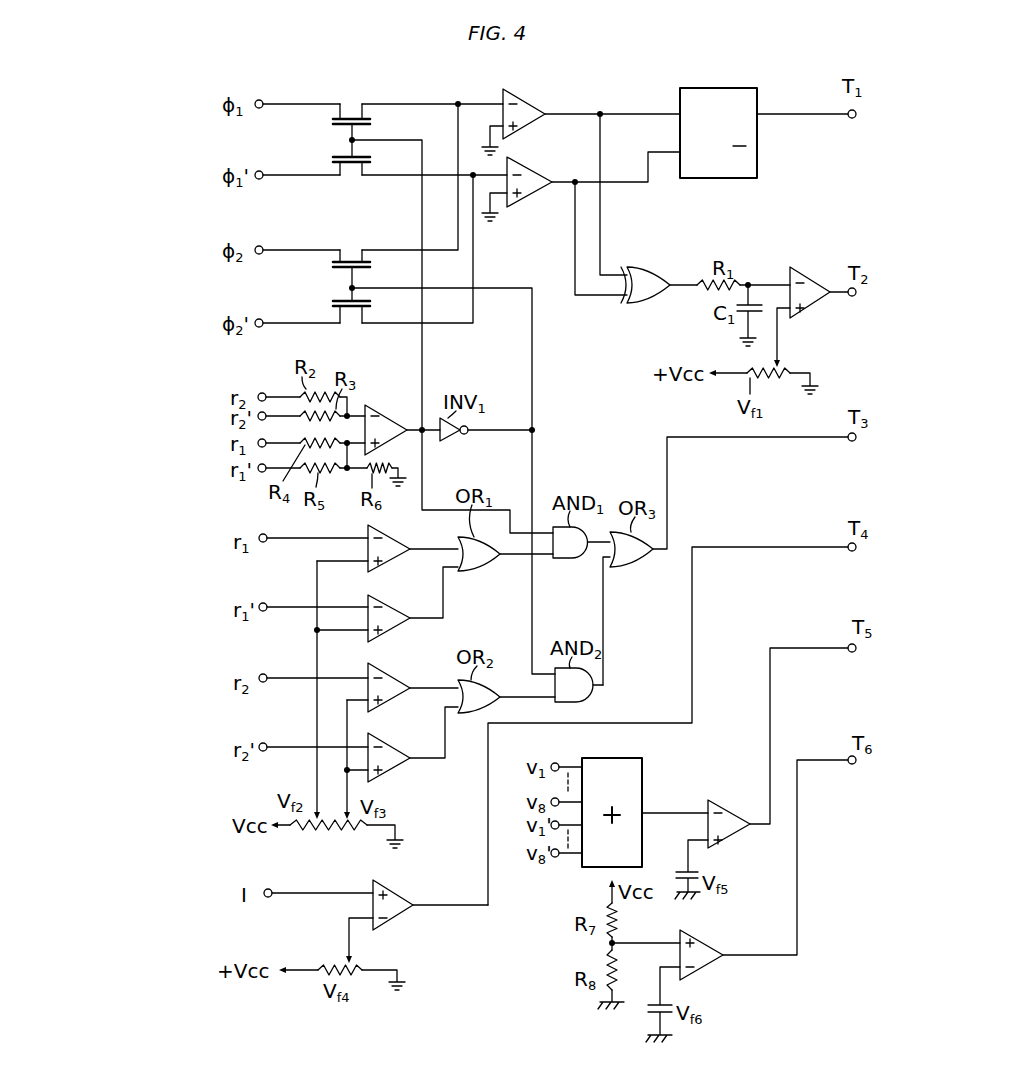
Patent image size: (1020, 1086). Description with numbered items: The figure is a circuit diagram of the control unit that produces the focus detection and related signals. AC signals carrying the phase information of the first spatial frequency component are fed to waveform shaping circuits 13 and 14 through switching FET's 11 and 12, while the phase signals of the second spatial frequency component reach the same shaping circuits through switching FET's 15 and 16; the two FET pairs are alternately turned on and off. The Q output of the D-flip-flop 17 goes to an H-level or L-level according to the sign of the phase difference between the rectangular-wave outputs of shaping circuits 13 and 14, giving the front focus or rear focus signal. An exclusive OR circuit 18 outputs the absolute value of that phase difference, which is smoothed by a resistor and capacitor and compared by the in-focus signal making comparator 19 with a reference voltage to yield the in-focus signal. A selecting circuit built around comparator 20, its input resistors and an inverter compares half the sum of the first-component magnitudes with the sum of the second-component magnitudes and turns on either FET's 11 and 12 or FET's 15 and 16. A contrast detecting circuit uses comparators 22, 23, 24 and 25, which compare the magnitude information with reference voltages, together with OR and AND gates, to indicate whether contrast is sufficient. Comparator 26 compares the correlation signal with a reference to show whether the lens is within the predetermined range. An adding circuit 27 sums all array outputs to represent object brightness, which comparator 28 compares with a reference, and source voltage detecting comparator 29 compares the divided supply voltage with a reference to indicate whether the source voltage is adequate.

The switching FET 11 is at (365, 122).
The switching FET 12 is at (365, 157).
The waveform shaping circuit 13 is at (528, 79).
The waveform shaping circuit 14 is at (534, 148).
The switching FET 15 is at (365, 269).
The switching FET 16 is at (365, 305).
The D-flip-flop 17 is at (720, 88).
The exclusive OR circuit 18 is at (652, 267).
The in-focus signal making comparator 19 is at (818, 257).
The comparator 20 is at (394, 395).
The comparator 22 is at (390, 515).
The comparator 23 is at (382, 595).
The comparator 24 is at (382, 663).
The comparator 25 is at (382, 733).
The comparator 26 is at (392, 870).
The adding circuit 27 is at (612, 758).
The comparator 28 is at (736, 790).
The source voltage detecting comparator 29 is at (706, 920).